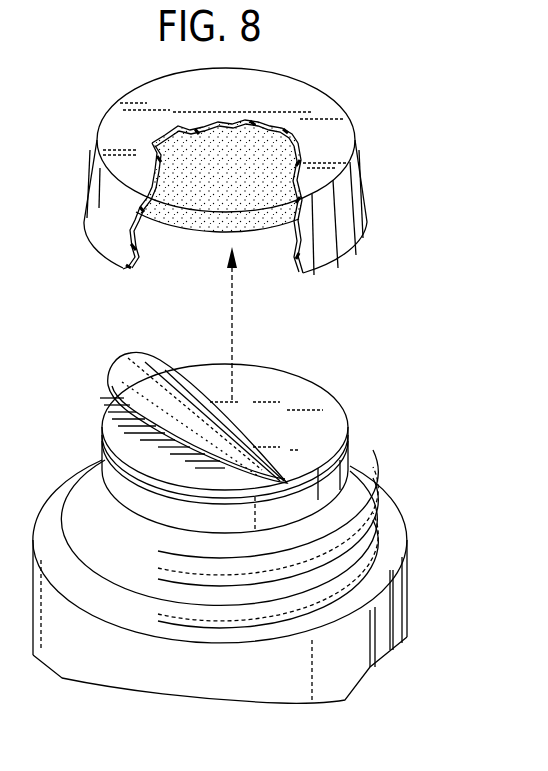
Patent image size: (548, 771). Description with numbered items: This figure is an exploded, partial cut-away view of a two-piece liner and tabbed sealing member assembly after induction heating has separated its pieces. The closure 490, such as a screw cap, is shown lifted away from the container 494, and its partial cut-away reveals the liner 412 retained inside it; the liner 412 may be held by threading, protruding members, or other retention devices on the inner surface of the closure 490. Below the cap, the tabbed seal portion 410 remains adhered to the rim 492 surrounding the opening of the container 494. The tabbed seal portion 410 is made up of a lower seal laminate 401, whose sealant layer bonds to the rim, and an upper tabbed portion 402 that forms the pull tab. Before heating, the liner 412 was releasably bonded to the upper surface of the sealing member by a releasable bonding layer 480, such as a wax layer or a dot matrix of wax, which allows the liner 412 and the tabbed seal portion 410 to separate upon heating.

The lower seal laminate 401 is at (131, 440).
The upper tabbed portion 402 is at (110, 388).
The tabbed seal portion 410 is at (219, 430).
The liner 412 is at (237, 178).
The releasable bonding layer 480 is at (212, 243).
The closure 490 is at (252, 222).
The rim 492 is at (347, 464).
The container 494 is at (408, 537).